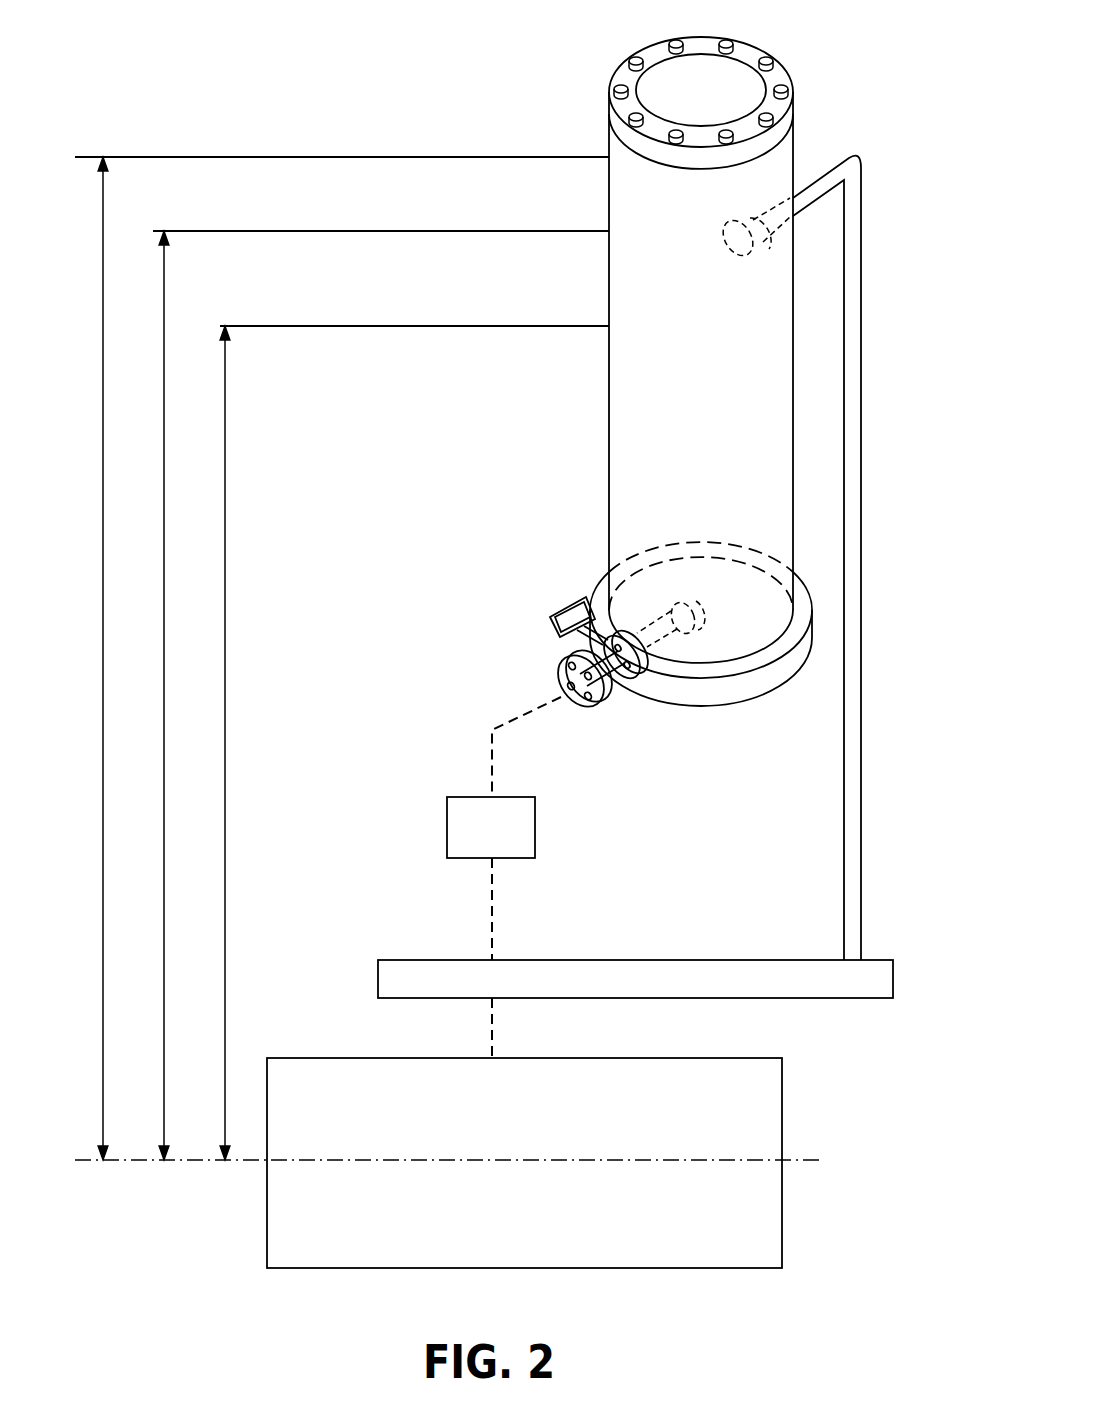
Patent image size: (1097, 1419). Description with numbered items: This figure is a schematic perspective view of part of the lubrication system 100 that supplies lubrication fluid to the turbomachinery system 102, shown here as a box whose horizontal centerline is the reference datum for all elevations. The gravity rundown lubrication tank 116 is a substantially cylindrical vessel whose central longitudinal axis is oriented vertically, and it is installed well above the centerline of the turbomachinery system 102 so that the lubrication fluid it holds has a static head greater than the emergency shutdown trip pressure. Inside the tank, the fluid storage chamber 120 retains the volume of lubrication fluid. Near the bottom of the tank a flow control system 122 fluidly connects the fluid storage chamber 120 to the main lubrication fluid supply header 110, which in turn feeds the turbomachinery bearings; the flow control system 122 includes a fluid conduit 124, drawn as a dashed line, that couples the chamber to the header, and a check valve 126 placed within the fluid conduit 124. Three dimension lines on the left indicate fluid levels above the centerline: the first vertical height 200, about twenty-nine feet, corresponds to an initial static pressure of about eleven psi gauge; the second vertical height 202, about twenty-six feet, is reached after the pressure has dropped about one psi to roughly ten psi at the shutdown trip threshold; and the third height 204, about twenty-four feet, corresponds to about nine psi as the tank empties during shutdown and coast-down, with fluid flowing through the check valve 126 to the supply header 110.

The lubrication system 100 is at (138, 104).
The turbomachinery system 102 is at (783, 1097).
The main lubrication fluid supply header 110 is at (894, 980).
The gravity rundown lubrication tank 116 is at (793, 117).
The fluid storage chamber 120 is at (665, 405).
The flow control system 122 is at (548, 747).
The fluid conduit 124 is at (525, 713).
The check valve 126 is at (491, 827).
The first vertical height 200 is at (103, 210).
The second vertical height 202 is at (164, 299).
The third height 204 is at (227, 461).